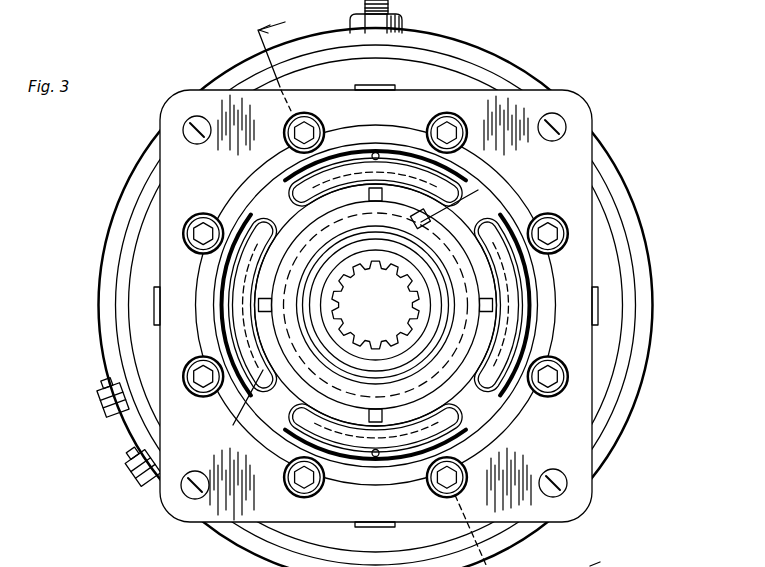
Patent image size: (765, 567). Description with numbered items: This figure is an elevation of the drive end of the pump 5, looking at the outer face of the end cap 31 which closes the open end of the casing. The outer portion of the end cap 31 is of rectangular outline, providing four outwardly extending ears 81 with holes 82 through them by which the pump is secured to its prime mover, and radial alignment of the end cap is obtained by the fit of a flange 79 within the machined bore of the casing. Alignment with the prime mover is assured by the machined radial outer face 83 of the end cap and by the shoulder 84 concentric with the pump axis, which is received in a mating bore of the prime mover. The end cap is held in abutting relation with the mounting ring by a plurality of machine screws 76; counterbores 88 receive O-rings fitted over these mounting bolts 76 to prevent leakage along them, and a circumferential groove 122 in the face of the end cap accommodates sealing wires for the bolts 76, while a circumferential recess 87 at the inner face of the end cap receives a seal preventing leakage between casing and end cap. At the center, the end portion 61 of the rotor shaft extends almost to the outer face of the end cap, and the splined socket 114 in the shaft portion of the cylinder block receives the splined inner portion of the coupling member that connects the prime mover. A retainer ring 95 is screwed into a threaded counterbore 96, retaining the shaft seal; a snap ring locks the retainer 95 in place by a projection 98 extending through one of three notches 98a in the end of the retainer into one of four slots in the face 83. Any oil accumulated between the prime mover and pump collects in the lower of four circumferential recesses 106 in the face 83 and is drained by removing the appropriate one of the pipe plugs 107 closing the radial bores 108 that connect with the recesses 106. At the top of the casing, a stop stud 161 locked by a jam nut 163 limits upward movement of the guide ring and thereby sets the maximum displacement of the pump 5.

The pump assembly 5 is at (265, 67).
The end cap 31 is at (158, 253).
The end portion of the rotor shaft 61 is at (366, 351).
The machine screws 76 is at (207, 214).
The flange 79 is at (603, 561).
The ears 81 is at (563, 98).
The holes 82 is at (566, 130).
The outer face 83 is at (583, 190).
The shoulder 84 is at (555, 298).
The circumferential recess 87 is at (567, 566).
The counterbores 88 is at (150, 492).
The ring 95 is at (478, 193).
The threaded counterbore 96 is at (458, 280).
The projection 98 is at (255, 328).
The notches 98a is at (450, 190).
The circumferential recesses 106 is at (300, 418).
The pipe plugs 107 is at (392, 72).
The radial bores 108 is at (384, 152).
The splined socket 114 is at (391, 301).
The circumferential groove 122 is at (497, 403).
The stop stud 161 is at (388, 13).
The jam nut 163 is at (350, 22).